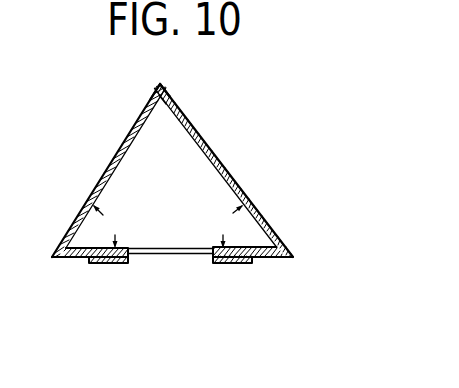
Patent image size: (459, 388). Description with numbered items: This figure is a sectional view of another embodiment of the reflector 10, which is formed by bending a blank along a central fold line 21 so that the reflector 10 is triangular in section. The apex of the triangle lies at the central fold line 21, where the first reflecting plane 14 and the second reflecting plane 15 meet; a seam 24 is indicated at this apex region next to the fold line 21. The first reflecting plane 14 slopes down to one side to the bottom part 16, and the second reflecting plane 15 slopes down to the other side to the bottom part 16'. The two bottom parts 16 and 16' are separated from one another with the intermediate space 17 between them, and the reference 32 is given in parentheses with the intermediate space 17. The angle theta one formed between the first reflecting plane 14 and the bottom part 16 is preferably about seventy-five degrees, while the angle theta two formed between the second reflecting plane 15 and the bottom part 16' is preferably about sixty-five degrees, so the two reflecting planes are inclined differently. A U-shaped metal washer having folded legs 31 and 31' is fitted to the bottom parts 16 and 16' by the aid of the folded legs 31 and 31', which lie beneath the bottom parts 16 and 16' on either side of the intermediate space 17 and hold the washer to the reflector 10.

The reflector 10 is at (214, 145).
The first reflecting plane 14 is at (108, 165).
The second reflecting plane 15 is at (230, 175).
The central fold line 21 is at (158, 84).
The apex seam 24 is at (175, 103).
The bottom part 16 is at (90, 275).
The bottom part 16' is at (253, 275).
The folded leg 31 is at (108, 280).
The folded leg 31' is at (232, 279).
The intermediate space 17 is at (164, 254).
The base plate (alternate) 32 is at (170, 288).